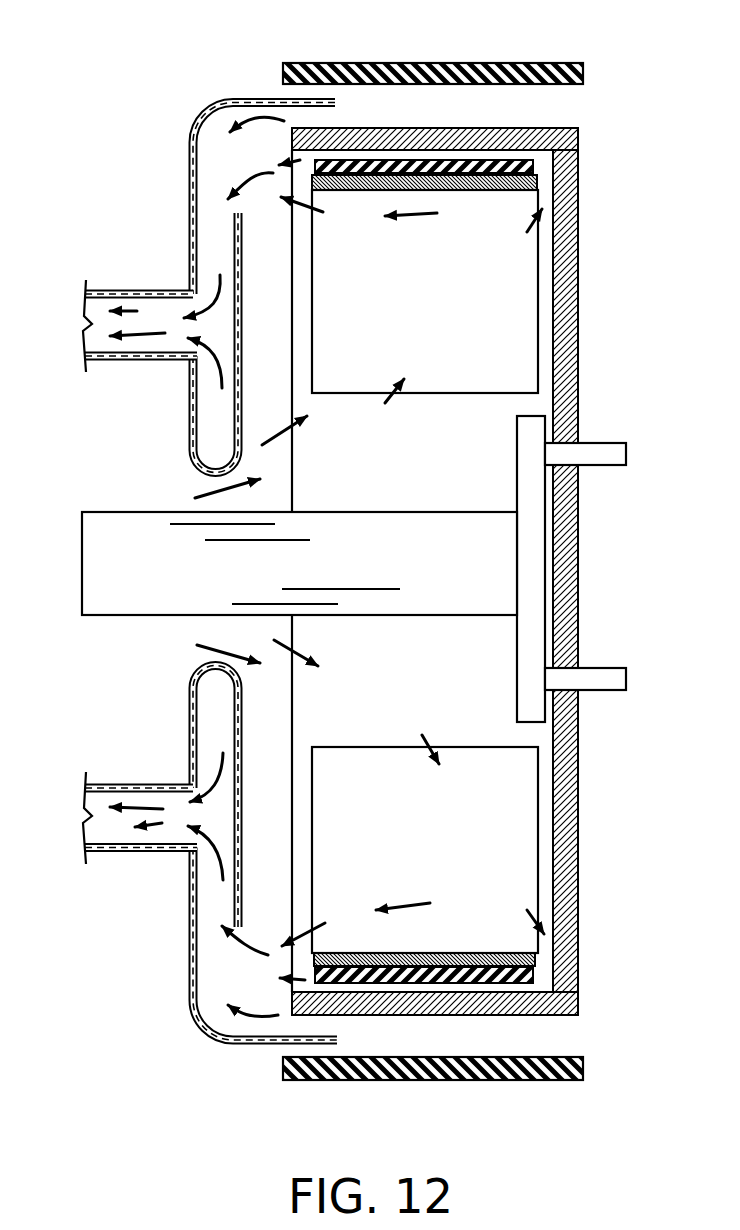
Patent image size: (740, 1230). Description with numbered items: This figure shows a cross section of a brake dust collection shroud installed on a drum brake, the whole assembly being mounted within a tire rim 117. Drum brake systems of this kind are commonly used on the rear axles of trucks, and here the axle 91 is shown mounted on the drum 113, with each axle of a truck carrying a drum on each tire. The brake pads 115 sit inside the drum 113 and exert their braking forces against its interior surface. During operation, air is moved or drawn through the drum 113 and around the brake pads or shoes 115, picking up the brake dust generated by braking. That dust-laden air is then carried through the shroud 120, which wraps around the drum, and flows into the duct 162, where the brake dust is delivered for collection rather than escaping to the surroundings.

The axle 91 is at (178, 616).
The drum 113 is at (443, 128).
The brake pad 115 is at (530, 167).
The tire rim 117 is at (312, 64).
The shroud 120 is at (190, 187).
The duct 162 is at (140, 360).